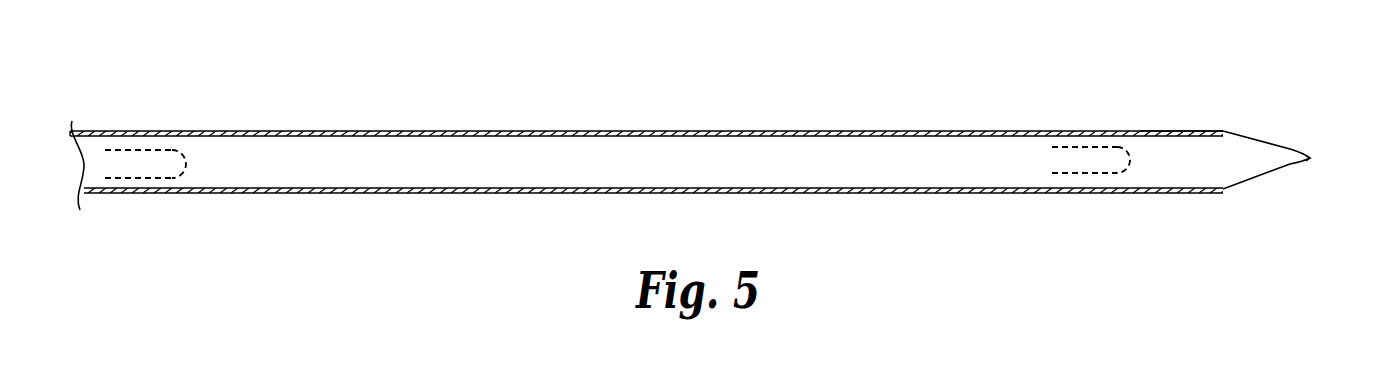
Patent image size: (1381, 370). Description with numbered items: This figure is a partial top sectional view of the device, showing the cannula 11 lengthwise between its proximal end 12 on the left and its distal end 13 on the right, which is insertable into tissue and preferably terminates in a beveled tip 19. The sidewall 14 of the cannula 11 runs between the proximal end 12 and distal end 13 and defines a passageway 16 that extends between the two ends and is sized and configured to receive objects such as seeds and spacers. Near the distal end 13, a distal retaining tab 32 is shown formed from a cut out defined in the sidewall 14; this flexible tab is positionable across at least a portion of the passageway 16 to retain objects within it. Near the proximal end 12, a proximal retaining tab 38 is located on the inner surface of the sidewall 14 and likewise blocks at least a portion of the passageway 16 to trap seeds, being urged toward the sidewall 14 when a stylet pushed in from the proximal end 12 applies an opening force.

The cannula 11 is at (568, 131).
The proximal end 12 is at (93, 133).
The distal end 13 is at (1168, 131).
The sidewall 14 is at (1222, 130).
The passageway 16 is at (680, 173).
The beveled tip 19 is at (1312, 159).
The distal retaining tab 32 is at (1087, 162).
The proximal retaining tab 38 is at (160, 162).